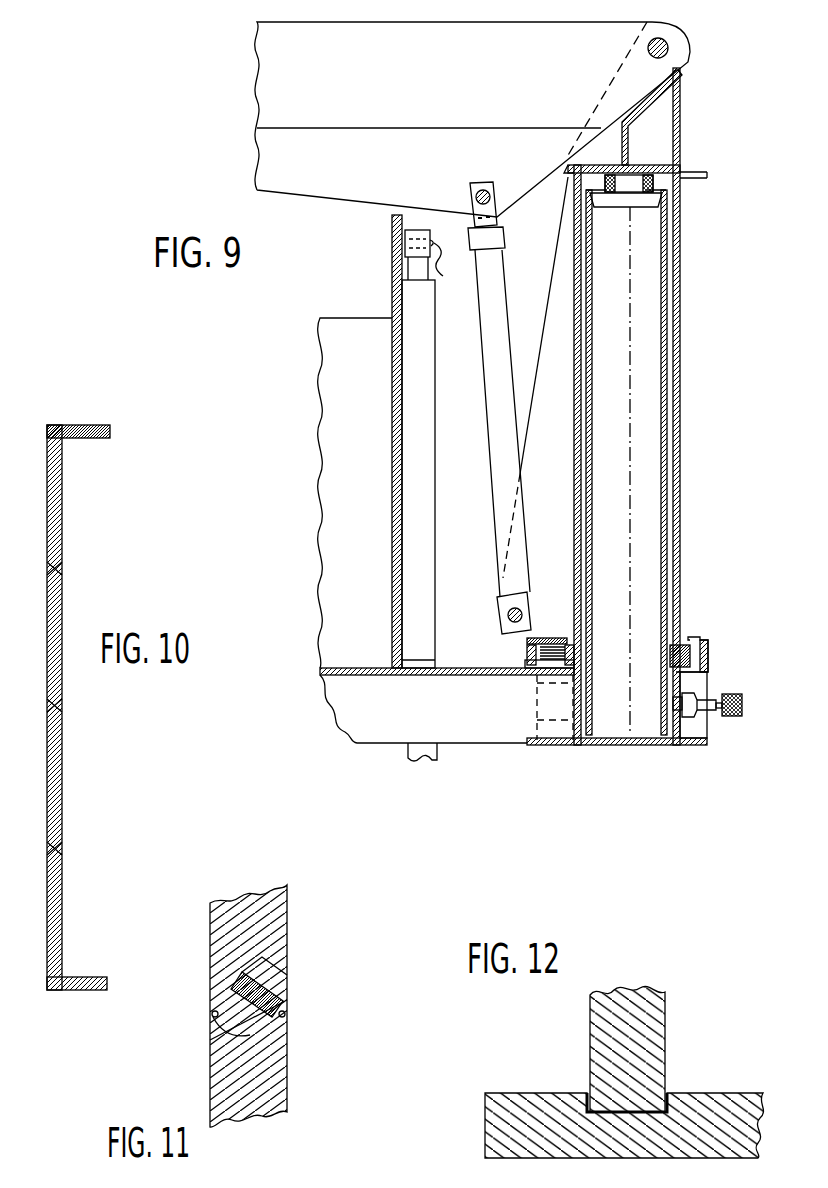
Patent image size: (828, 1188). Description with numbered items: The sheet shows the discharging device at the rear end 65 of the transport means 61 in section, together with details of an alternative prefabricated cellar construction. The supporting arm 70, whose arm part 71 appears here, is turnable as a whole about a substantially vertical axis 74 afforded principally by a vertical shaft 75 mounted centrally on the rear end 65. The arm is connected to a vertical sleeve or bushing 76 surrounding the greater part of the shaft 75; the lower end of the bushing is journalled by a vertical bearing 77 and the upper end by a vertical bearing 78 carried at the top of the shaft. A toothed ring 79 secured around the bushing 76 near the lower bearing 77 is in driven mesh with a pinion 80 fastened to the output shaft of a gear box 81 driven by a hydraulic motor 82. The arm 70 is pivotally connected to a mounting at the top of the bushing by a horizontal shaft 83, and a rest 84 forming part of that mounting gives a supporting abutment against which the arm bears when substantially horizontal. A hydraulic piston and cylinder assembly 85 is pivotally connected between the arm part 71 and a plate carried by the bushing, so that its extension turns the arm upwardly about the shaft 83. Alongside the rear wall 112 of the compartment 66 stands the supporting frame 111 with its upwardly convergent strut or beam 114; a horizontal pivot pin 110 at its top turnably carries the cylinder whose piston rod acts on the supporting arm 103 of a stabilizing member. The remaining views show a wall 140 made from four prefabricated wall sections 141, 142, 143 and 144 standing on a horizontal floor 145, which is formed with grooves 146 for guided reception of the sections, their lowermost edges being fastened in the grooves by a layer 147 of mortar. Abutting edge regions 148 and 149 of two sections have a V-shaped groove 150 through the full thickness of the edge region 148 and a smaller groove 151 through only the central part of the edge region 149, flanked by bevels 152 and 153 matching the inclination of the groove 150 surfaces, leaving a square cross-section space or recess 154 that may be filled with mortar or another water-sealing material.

In FIG. 9, the supporting arm 70 is at (254, 53).
In FIG. 9, the arm part 71 is at (272, 108).
In FIG. 9, the horizontal shaft 83 is at (668, 50).
In FIG. 9, the rest 84 is at (655, 112).
In FIG. 9, the vertical bearing 78 is at (681, 190).
In FIG. 9, the vertical shaft 75 is at (678, 350).
In FIG. 9, the sleeve or bushing 76 is at (681, 467).
In FIG. 9, the vertical axis 74 is at (632, 455).
In FIG. 9, the rear end 65 is at (679, 746).
In FIG. 9, the toothed ring 79 is at (710, 655).
In FIG. 9, the vertical bearing 77 is at (672, 654).
In FIG. 9, the hydraulic piston and cylinder assembly 85 is at (491, 407).
In FIG. 9, the rear wall 112 is at (396, 440).
In FIG. 9, the strut or beam 114 is at (436, 553).
In FIG. 9, the supporting frame 111 is at (398, 249).
In FIG. 9, the horizontal pivot pin 110 is at (451, 268).
In FIG. 9, the compartment 66 is at (326, 603).
In FIG. 9, the transport means 61 is at (357, 746).
In FIG. 9, the supporting arm 103 is at (422, 762).
In FIG. 9, the pinion 80 is at (527, 650).
In FIG. 9, the gear box 81 is at (537, 680).
In FIG. 9, the hydraulic motor 82 is at (540, 721).
In FIG. 10, the wall 140 is at (66, 512).
In FIG. 10, the wall section 141 is at (63, 548).
In FIG. 10, the wall section 142 is at (63, 608).
In FIG. 10, the wall section 143 is at (63, 775).
In FIG. 10, the wall section 144 is at (63, 887).
In FIG. 11, the edge region 148 is at (283, 928).
In FIG. 11, the edge region 149 is at (283, 1052).
In FIG. 11, the V-shaped groove 150 is at (283, 958).
In FIG. 11, the smaller groove 151 is at (228, 1040).
In FIG. 11, the bevel 152 is at (286, 1016).
In FIG. 11, the bevel 153 is at (212, 1017).
In FIG. 11, the square cross-section space or recess 154 is at (233, 992).
In FIG. 12, the horizontal floor 145 is at (740, 1102).
In FIG. 12, the groove 146 is at (608, 1108).
In FIG. 12, the layer of mortar 147 is at (587, 1091).